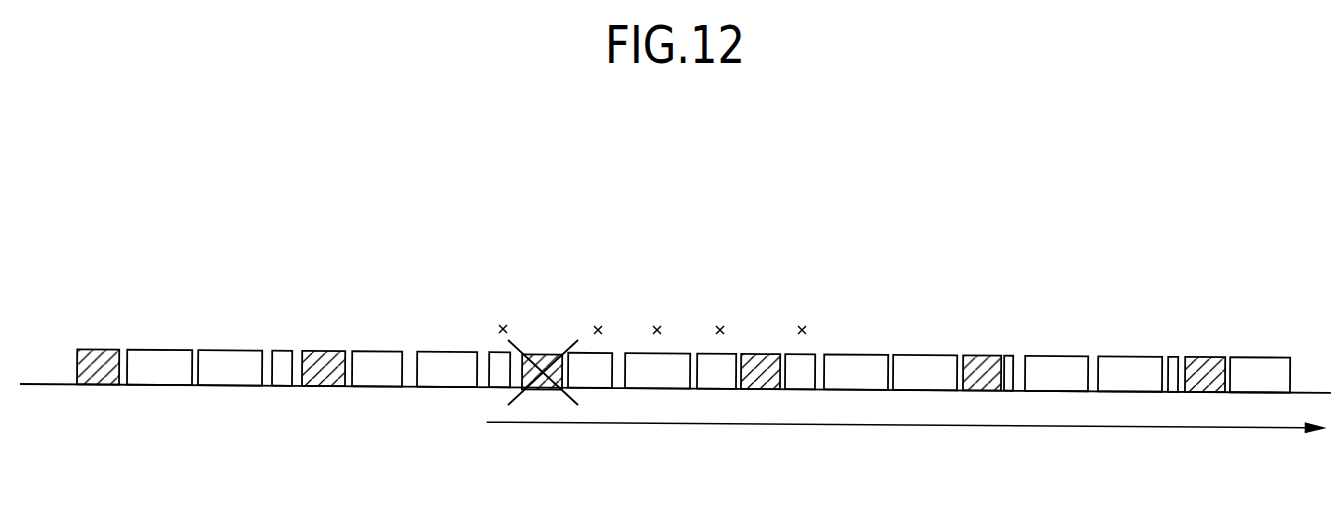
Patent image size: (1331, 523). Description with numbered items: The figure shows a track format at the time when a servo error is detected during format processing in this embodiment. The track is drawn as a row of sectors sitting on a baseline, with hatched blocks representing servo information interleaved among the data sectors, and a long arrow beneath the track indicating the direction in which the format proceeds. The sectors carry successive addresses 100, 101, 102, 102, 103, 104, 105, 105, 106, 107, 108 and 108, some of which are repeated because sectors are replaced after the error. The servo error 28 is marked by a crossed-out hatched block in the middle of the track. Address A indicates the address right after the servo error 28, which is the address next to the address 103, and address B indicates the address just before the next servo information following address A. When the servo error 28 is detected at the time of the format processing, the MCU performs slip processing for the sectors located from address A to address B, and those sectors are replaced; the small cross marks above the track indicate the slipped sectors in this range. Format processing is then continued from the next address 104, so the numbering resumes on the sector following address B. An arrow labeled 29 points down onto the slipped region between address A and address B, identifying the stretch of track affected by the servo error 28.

The servo error 28 is at (540, 362).
The position indicator arrow 29 is at (658, 274).
The address right after the servo error A is at (570, 320).
The address just before the next servo information B is at (743, 321).
The data block 100 is at (159, 349).
The data block 101 is at (230, 350).
The data block 102 is at (334, 350).
The address 103 is at (447, 351).
The next address 104 is at (856, 354).
The data block 105 is at (953, 354).
The data block 106 is at (1056, 355).
The data block 107 is at (1130, 356).
The data block 108 is at (1224, 356).